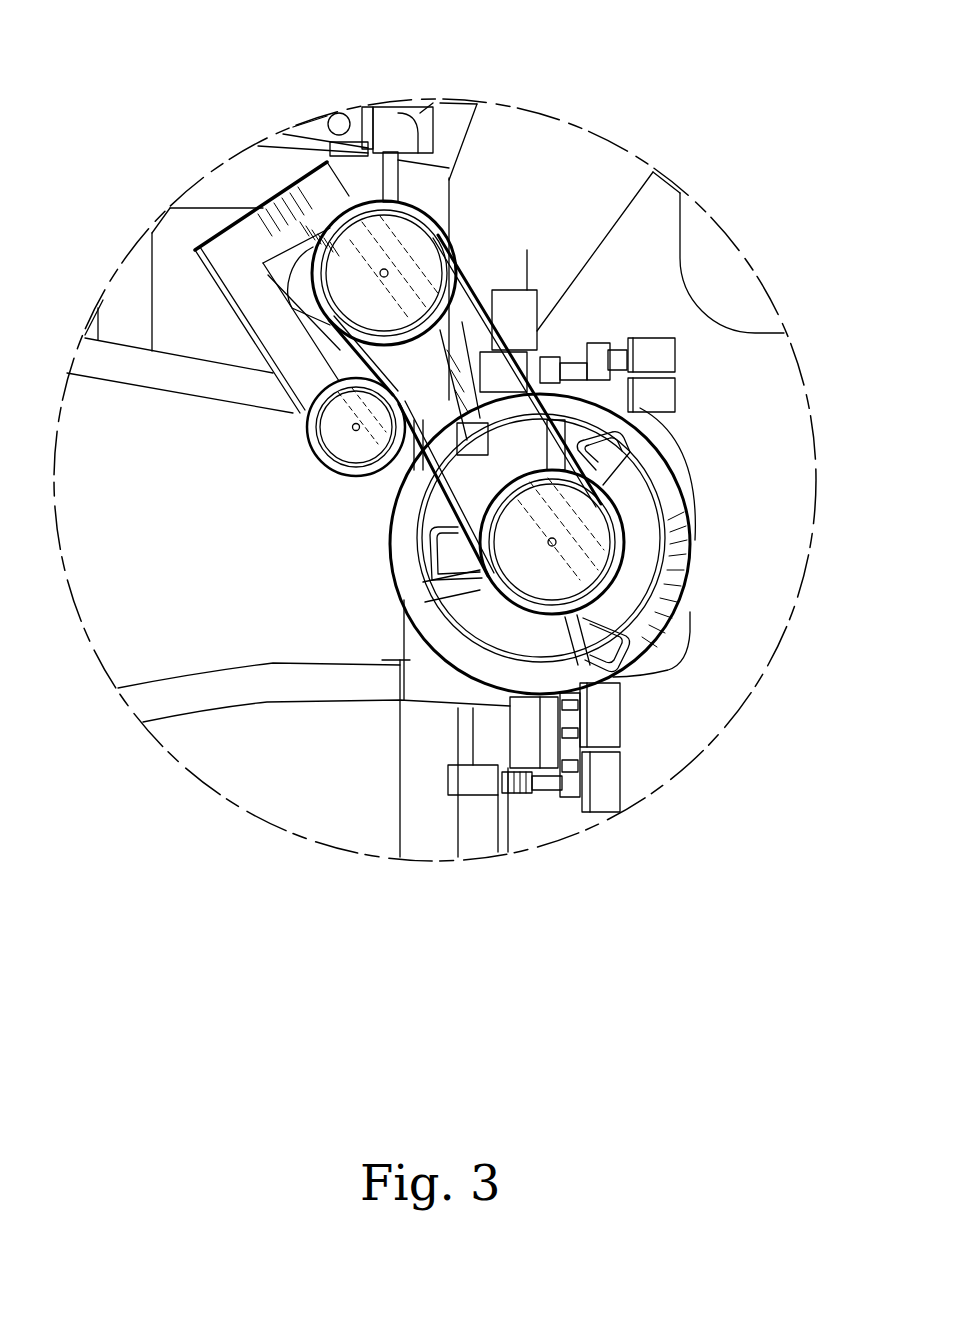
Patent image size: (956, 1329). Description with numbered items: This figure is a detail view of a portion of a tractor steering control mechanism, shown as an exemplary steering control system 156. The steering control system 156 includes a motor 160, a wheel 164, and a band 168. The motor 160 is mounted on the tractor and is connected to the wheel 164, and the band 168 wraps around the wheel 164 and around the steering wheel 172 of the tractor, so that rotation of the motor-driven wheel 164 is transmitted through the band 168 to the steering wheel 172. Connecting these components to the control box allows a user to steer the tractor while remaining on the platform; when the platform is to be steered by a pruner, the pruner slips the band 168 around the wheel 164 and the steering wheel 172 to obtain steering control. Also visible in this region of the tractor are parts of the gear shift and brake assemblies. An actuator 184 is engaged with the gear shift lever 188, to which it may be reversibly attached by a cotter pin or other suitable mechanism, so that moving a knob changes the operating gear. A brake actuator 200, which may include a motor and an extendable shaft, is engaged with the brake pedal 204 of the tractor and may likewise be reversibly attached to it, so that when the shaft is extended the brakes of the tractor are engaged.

The steering control system 156 is at (213, 50).
The motor 160 is at (257, 210).
The wheel 164 is at (430, 218).
The band 168 is at (485, 292).
The actuator 184 is at (527, 250).
The gear shift lever 188 is at (657, 337).
The steering wheel 172 is at (613, 685).
The brake actuator 200 is at (455, 800).
The brake pedal 204 is at (592, 817).